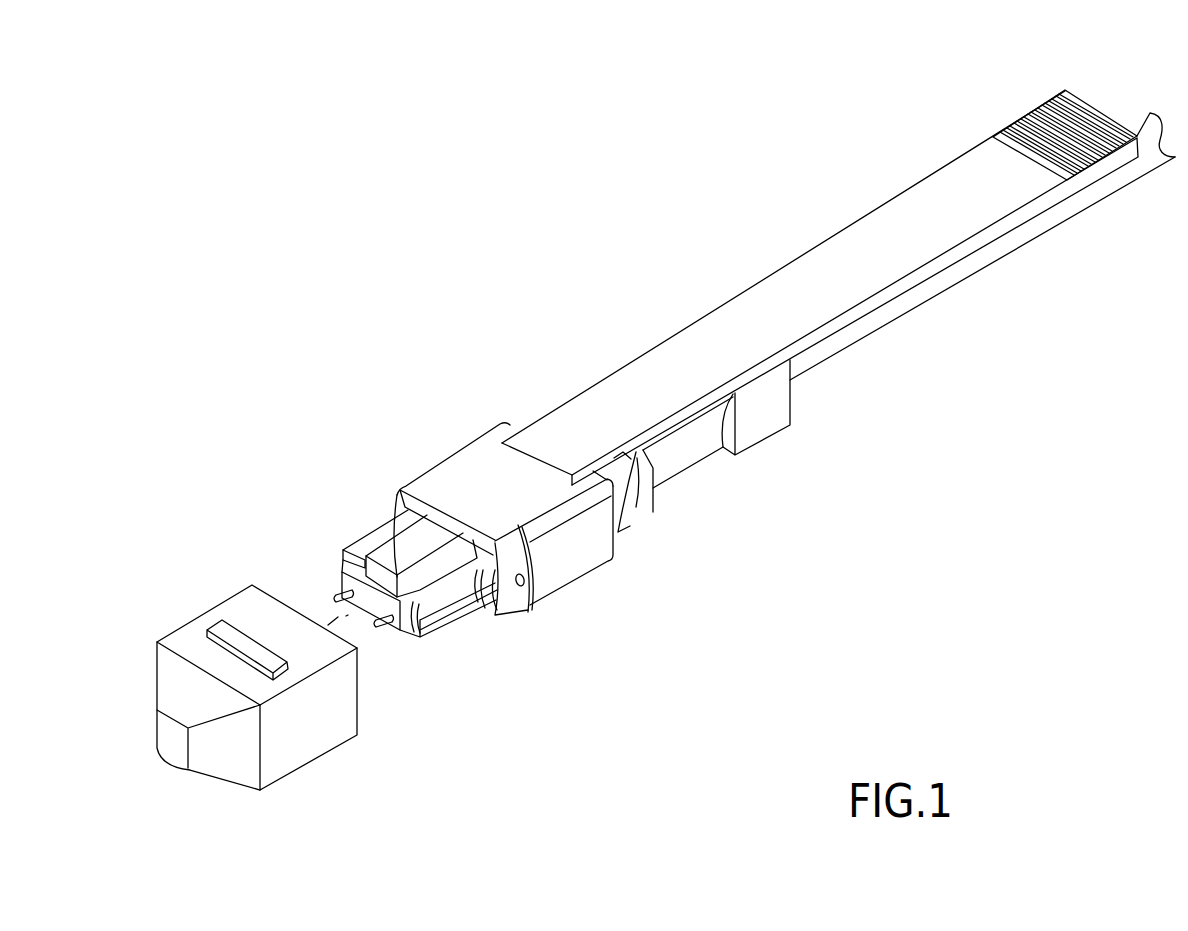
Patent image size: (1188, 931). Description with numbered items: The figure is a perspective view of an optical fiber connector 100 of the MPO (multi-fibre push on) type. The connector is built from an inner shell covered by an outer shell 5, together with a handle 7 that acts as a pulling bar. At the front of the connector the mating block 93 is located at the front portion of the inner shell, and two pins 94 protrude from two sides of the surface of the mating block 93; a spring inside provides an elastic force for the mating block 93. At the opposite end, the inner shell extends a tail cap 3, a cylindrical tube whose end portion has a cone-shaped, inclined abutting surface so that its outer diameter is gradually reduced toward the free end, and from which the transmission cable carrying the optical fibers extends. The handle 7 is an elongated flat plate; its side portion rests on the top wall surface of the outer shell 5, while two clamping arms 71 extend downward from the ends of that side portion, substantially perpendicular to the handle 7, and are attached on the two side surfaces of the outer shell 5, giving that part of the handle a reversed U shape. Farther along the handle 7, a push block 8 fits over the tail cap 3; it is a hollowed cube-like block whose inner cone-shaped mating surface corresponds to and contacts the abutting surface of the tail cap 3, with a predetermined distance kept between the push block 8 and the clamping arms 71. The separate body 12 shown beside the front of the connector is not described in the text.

The optical fiber connector 100 is at (466, 356).
The dust cap 12 is at (190, 635).
The mating block 93 is at (380, 537).
The pins 94 is at (379, 624).
The outer shell 5 is at (454, 507).
The clamping arms 71 is at (567, 555).
The tail cap 3 is at (680, 447).
The handle 7 is at (738, 328).
The push block 8 is at (755, 410).